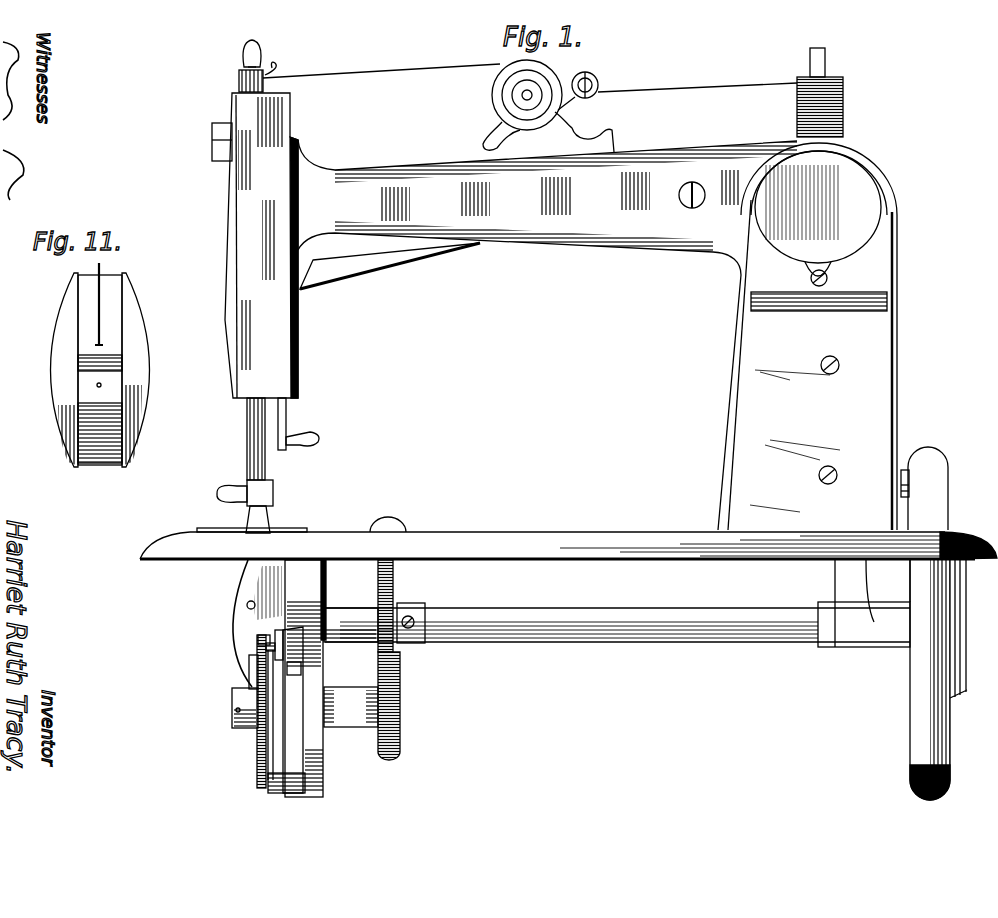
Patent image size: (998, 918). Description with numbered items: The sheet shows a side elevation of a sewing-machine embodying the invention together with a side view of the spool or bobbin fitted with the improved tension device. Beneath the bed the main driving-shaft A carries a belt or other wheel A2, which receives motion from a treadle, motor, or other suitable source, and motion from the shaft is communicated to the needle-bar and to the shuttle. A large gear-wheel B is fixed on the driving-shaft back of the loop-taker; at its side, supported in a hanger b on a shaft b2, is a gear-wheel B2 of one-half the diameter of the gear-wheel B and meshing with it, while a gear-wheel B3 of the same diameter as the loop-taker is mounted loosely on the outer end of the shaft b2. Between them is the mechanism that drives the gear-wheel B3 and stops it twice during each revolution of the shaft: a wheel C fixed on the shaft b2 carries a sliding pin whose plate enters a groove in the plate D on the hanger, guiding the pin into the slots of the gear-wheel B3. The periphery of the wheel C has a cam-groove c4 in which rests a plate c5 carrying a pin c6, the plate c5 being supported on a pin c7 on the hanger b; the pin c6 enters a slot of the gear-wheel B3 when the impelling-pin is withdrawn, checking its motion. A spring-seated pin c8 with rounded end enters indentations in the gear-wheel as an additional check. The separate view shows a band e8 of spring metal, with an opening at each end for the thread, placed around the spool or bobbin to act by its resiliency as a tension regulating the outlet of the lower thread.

In FIG. 1, the main driving-shaft A is at (606, 642).
In FIG. 1, the belt or other wheel A2 is at (932, 503).
In FIG. 1, the large gear-wheel B is at (393, 593).
In FIG. 1, the gear-wheel B2 is at (400, 697).
In FIG. 1, the gear-wheel B3 is at (270, 717).
In FIG. 1, the hanger b is at (323, 588).
In FIG. 1, the shaft b2 is at (373, 728).
In FIG. 1, the wheel C is at (262, 730).
In FIG. 1, the cam-groove c4 is at (257, 681).
In FIG. 1, the plate c5 is at (257, 651).
In FIG. 1, the pin c6 is at (257, 637).
In FIG. 1, the pin c7 is at (268, 632).
In FIG. 1, the spring-seated pin c8 is at (267, 788).
In FIG. 1, the plate D is at (293, 700).
In FIG. 11, the band e8 is at (113, 316).